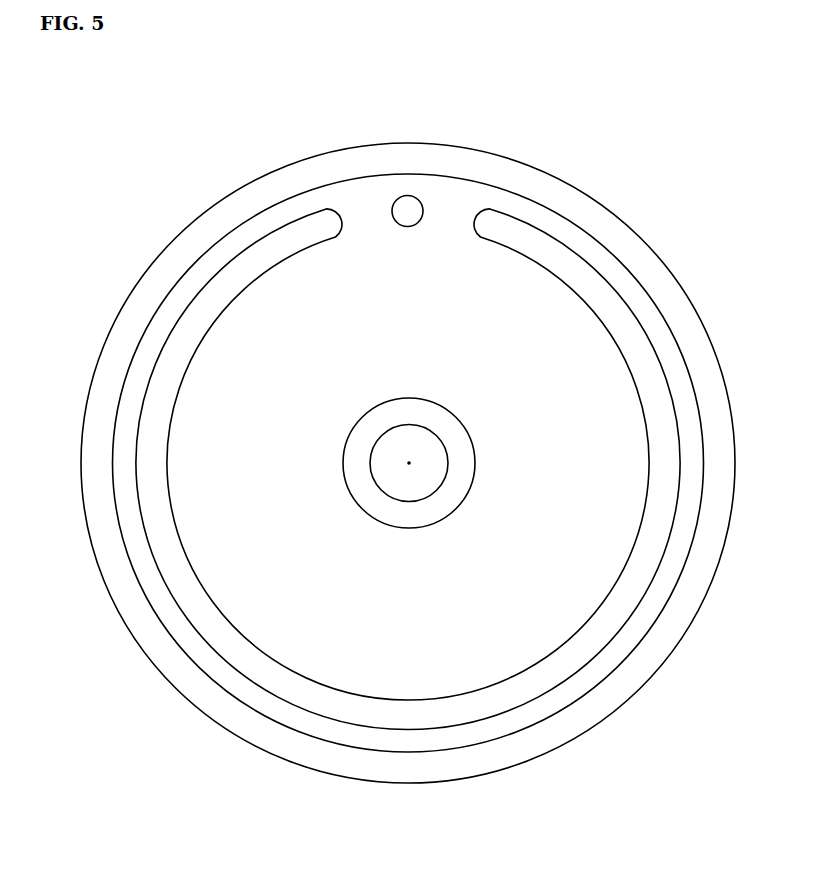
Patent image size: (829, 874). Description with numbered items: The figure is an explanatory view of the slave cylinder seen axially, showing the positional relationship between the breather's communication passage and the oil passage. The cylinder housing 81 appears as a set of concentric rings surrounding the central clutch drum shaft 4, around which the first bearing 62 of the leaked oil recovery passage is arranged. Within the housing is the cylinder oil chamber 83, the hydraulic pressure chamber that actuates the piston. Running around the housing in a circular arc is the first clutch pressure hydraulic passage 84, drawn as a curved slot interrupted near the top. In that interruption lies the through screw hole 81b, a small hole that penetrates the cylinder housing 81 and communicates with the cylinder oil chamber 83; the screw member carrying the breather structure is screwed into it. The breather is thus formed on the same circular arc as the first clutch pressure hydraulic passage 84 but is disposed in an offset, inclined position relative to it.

The cylinder housing 81 is at (515, 160).
The through screw hole 81b is at (416, 200).
The cylinder oil chamber 83 is at (547, 352).
The first clutch pressure hydraulic passage 84 is at (557, 246).
The first bearing 62 is at (372, 497).
The clutch drum shaft 4 is at (425, 485).